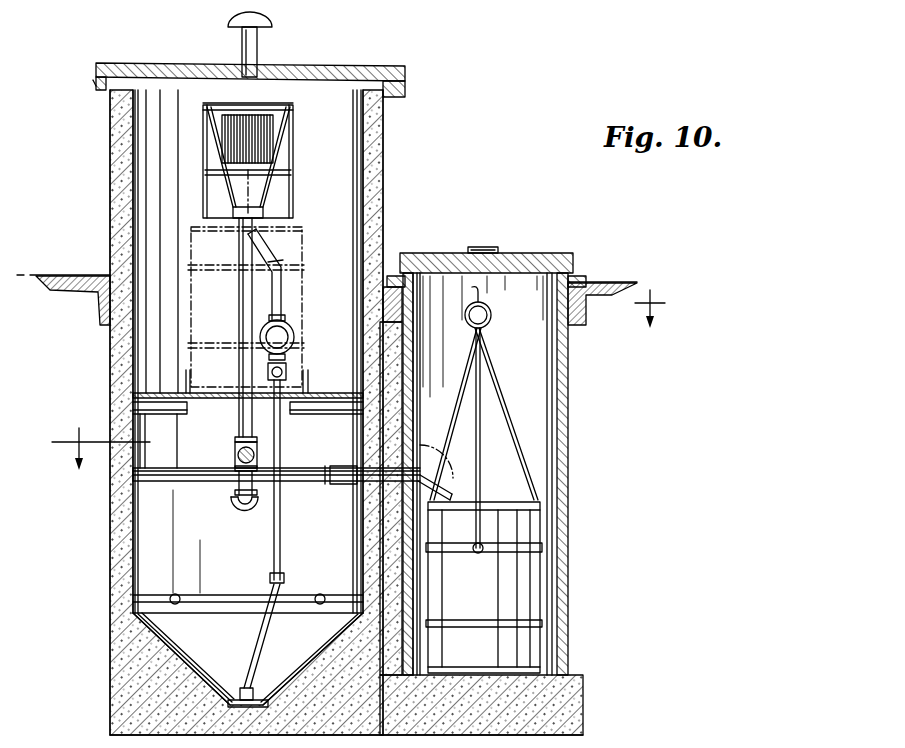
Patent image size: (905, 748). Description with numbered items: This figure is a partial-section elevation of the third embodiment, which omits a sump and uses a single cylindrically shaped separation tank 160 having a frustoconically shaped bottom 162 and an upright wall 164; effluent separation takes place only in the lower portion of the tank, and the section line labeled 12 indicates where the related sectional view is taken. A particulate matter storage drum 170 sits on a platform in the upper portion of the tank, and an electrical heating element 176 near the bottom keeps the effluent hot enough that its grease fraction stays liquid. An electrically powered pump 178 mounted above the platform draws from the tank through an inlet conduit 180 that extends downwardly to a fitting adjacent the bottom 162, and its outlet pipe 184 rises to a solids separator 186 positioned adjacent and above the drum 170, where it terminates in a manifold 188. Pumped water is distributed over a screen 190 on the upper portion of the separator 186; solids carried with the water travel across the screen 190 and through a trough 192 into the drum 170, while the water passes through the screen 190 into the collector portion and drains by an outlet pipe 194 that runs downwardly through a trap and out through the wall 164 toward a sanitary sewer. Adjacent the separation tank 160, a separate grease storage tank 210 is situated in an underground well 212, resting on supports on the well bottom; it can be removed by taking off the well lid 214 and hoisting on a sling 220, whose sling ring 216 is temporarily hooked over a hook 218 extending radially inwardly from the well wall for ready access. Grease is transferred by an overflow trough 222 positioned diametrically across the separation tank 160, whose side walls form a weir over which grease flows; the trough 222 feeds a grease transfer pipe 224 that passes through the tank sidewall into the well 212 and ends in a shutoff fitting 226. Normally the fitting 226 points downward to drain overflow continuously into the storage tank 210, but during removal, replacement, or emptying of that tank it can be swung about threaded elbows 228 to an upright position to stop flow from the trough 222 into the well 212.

The section line 12- 12 is at (365, 383).
The separation tank 160 is at (104, 352).
The frustoconically shaped bottom 162 is at (177, 641).
The upright wall 164 is at (112, 263).
The particulate matter storage drum 170 is at (306, 250).
The electrical heating element 176 is at (291, 603).
The electrically powered pump 178 is at (293, 331).
The inlet conduit 180 is at (282, 531).
The outlet pipe 184 is at (283, 293).
The solids separator 186 is at (268, 193).
The manifold 188 is at (274, 105).
The screen 190 is at (268, 142).
The trough 192 is at (255, 185).
The outlet pipe 194 is at (243, 412).
The grease storage tank 210 is at (520, 587).
The underground well 212 is at (566, 399).
The well lid 214 is at (538, 256).
The sling ring 216 is at (492, 320).
The hook 218 is at (480, 300).
The sling 220 is at (521, 444).
The overflow trough 222 is at (172, 484).
The grease transfer pipe 224 is at (392, 480).
The shutoff fitting 226 is at (448, 487).
The threaded elbows 228 is at (420, 445).